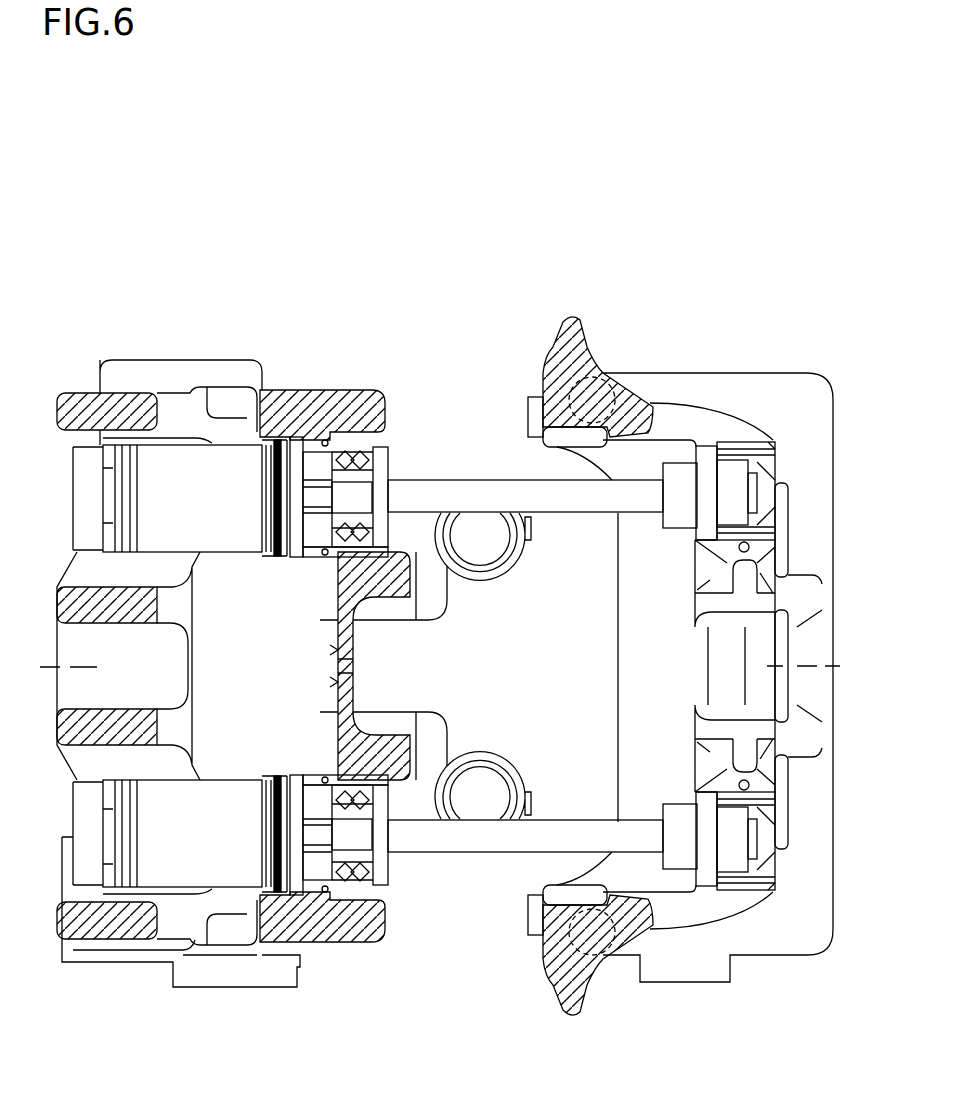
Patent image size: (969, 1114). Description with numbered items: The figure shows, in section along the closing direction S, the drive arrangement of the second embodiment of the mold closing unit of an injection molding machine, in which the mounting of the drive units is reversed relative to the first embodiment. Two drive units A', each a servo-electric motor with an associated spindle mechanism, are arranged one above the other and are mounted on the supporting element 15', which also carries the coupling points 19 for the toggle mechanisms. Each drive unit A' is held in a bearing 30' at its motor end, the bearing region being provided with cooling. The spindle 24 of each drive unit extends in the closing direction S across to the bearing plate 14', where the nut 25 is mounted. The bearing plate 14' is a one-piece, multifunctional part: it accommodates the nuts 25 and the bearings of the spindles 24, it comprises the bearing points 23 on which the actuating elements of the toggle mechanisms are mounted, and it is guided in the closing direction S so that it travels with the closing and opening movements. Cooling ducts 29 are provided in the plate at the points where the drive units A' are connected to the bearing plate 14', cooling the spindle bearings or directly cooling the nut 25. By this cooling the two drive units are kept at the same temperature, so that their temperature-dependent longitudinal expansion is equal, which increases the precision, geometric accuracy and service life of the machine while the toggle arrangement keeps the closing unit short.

The supporting element 15' is at (178, 651).
The drive unit A' is at (299, 611).
The bearing 30' is at (247, 666).
The cooling ducts 29 is at (326, 552).
The spindle 24 is at (483, 487).
The coupling points 19 is at (475, 784).
The nut 25 is at (707, 473).
The bearing points 23 is at (588, 383).
The bearing plate 14' is at (718, 704).
The closing direction S is at (450, 667).